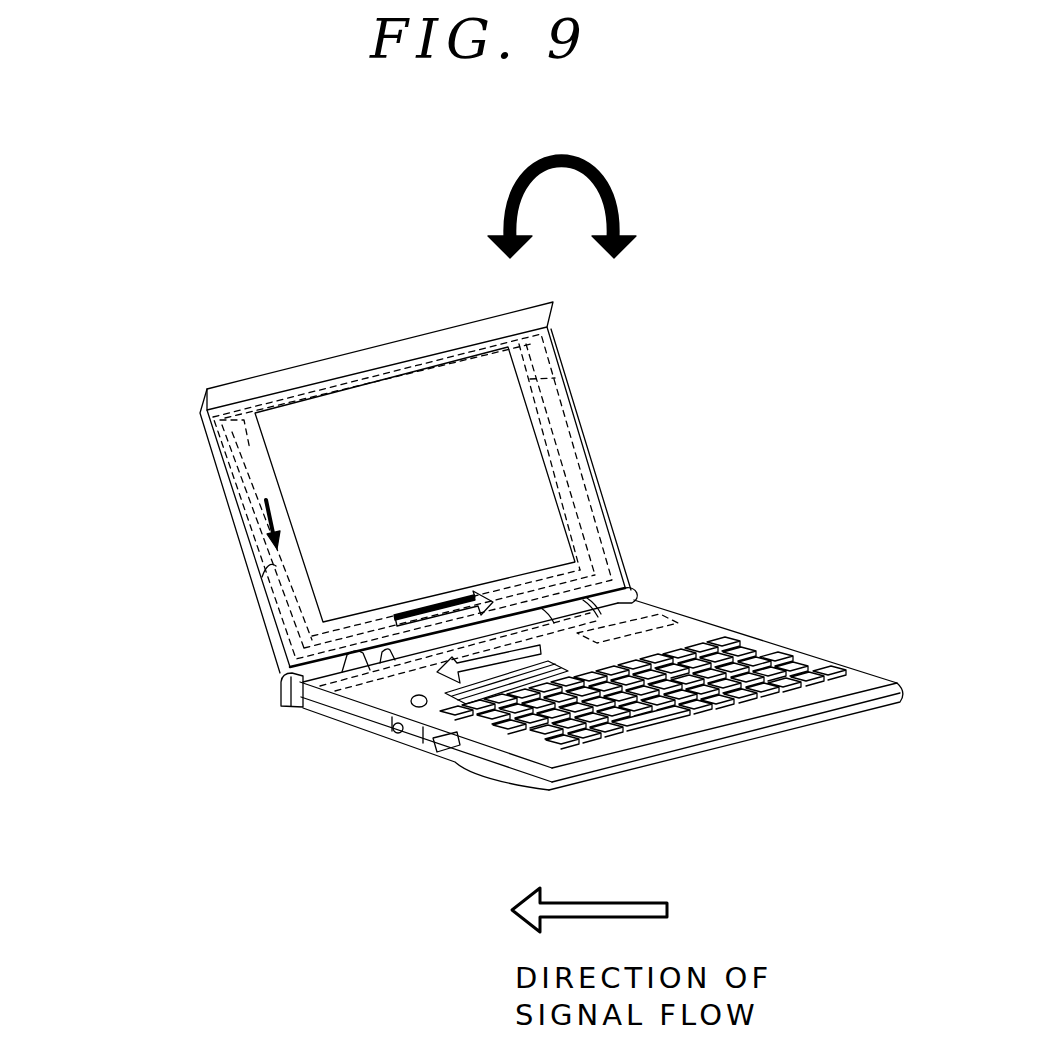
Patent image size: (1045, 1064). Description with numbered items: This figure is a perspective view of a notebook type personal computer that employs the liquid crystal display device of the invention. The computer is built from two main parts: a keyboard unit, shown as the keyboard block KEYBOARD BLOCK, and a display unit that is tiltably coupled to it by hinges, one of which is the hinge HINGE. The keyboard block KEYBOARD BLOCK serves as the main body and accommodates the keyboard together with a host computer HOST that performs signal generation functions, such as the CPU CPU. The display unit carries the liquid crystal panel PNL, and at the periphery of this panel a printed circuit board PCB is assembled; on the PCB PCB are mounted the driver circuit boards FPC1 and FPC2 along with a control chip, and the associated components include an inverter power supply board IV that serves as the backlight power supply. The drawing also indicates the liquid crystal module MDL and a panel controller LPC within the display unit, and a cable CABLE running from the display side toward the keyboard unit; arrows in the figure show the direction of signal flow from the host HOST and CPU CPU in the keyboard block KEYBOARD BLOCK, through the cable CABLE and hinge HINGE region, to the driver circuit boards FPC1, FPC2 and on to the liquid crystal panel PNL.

The liquid crystal panel PNL is at (415, 484).
The liquid crystal display module MDL is at (607, 570).
The LCD panel controller LPC is at (594, 553).
The inverter power supply board IV is at (568, 418).
The driver circuit board FPC2 is at (594, 467).
The driver circuit board FPC1 is at (233, 418).
The element PCB is at (228, 442).
The cable CABLE is at (275, 608).
The hinge HINGE is at (345, 670).
The keyboard unit KEYBOARD BLOCK is at (727, 707).
The host computer HOST is at (647, 614).
The element CPU is at (700, 615).